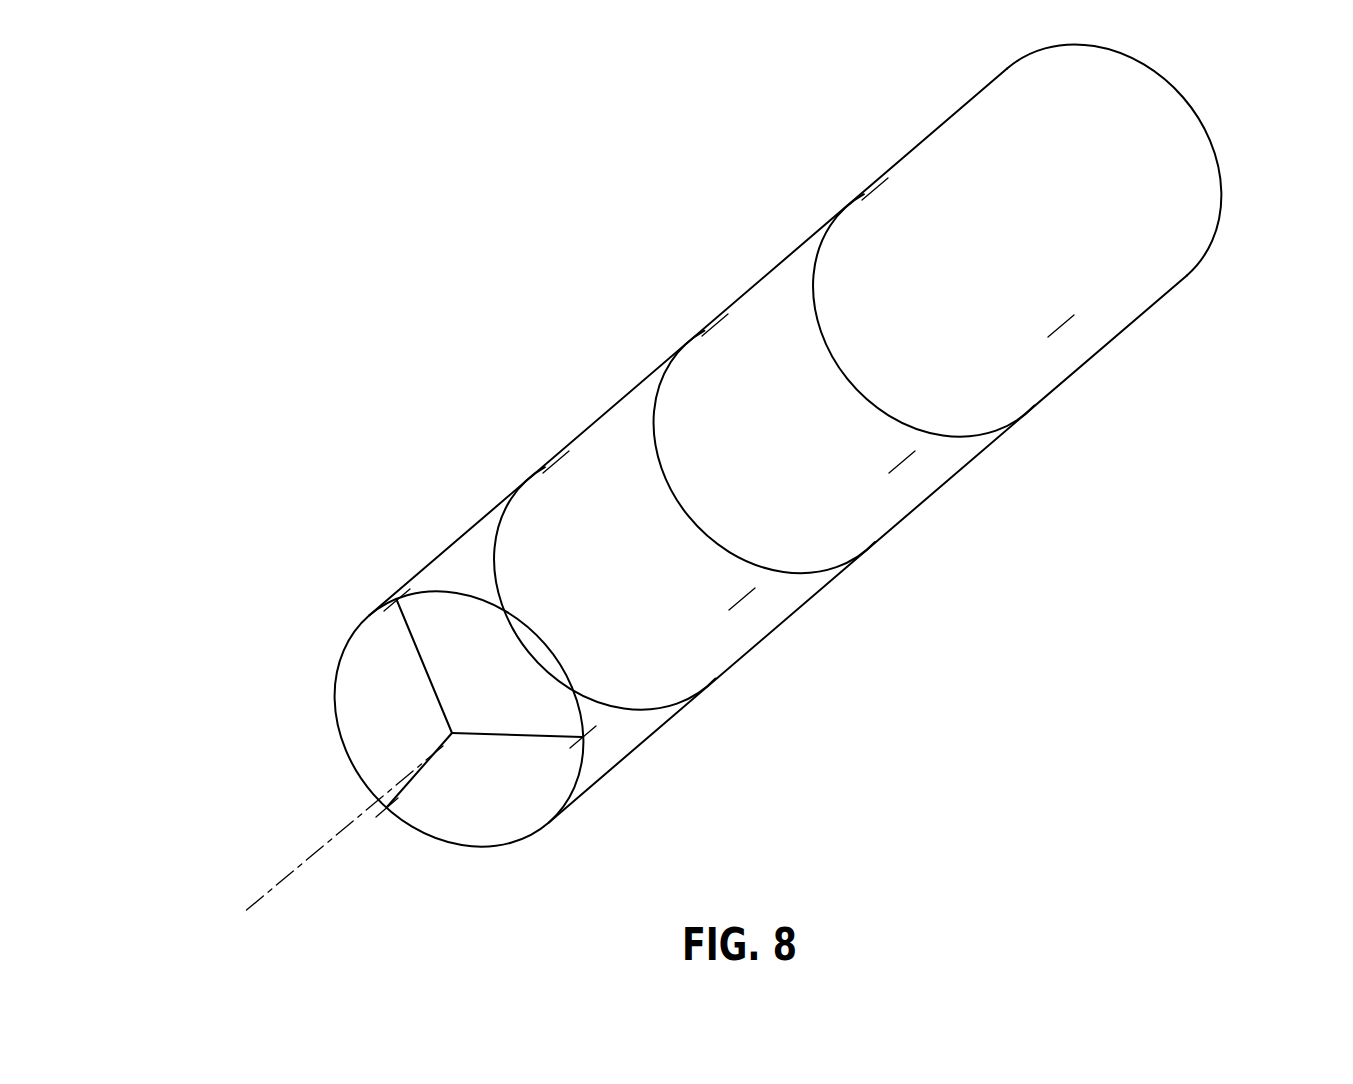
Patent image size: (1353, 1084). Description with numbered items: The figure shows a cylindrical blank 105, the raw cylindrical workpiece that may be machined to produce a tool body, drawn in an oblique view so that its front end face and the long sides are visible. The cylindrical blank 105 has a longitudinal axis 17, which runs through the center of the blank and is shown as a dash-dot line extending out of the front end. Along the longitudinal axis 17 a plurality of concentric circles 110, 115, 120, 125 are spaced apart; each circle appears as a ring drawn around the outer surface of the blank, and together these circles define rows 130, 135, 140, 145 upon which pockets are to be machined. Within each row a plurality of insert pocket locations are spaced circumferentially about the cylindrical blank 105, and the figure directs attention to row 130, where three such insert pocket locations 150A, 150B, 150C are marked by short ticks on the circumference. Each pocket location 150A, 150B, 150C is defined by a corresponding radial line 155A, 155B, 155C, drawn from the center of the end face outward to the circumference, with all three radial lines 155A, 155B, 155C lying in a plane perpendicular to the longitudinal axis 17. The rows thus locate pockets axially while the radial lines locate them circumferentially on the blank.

The longitudinal axis 17 is at (312, 855).
The cylindrical blank 105 is at (954, 143).
The concentric circle 110 is at (528, 837).
The concentric circle 115 is at (745, 620).
The concentric circle 120 is at (902, 480).
The concentric circle 125 is at (1062, 345).
The row 130 is at (580, 775).
The row 135 is at (732, 552).
The row 140 is at (892, 413).
The row 145 is at (1057, 285).
The insert pocket location 150A is at (582, 737).
The insert pocket location 150B is at (388, 807).
The insert pocket location 150C is at (396, 603).
The radial line 155A is at (533, 733).
The radial line 155B is at (415, 778).
The radial line 155C is at (432, 692).